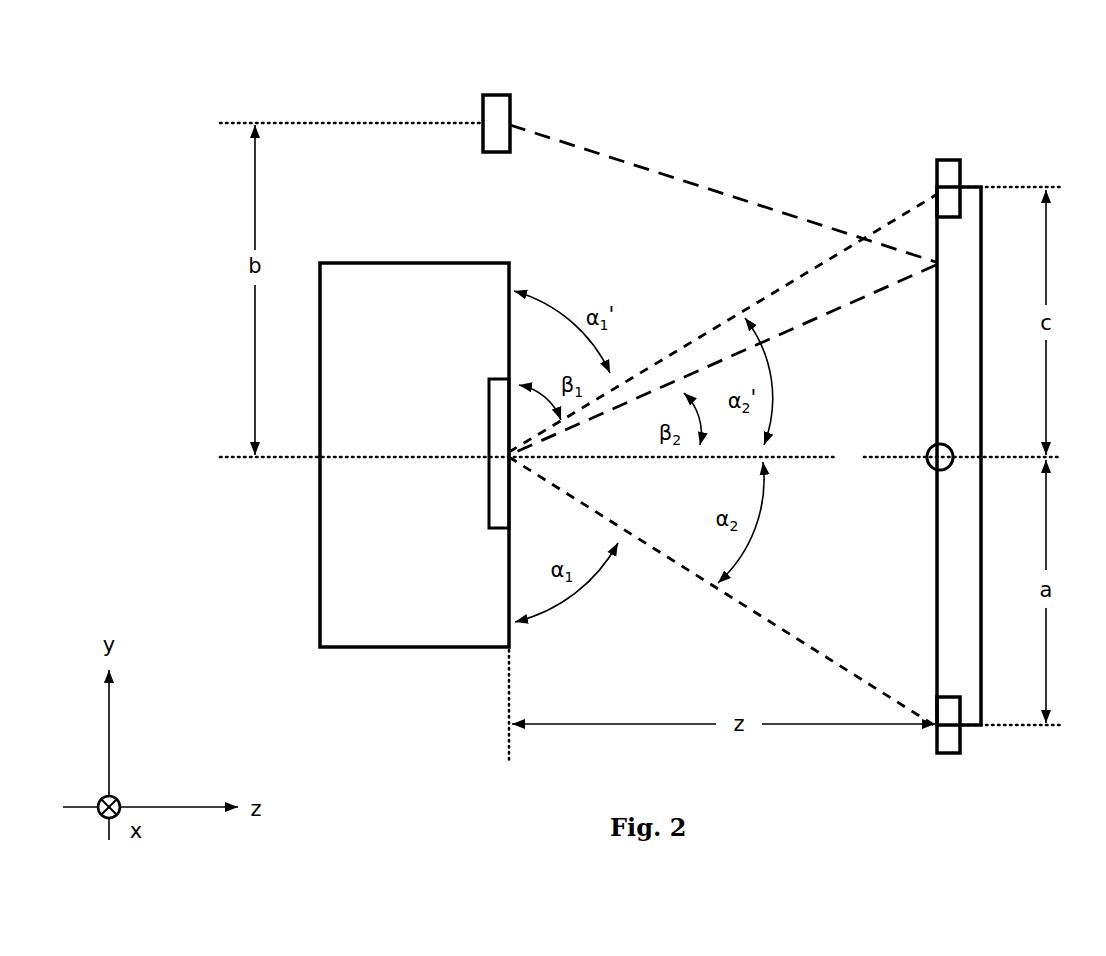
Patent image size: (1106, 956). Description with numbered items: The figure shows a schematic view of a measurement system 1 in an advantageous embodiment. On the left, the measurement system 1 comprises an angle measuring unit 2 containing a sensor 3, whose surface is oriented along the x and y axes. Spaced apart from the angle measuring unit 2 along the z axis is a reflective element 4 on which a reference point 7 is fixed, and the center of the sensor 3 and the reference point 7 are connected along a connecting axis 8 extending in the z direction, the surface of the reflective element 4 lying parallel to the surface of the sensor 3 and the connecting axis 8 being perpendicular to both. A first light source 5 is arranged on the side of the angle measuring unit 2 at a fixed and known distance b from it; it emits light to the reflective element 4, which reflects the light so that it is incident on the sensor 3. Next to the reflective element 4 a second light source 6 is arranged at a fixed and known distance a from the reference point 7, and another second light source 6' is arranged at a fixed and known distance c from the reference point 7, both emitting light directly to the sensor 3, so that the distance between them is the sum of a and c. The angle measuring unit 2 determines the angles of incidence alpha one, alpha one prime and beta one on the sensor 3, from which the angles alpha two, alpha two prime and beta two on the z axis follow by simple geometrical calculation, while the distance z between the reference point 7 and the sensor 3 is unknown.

The measurement system 1 is at (825, 110).
The angle measuring unit 2 is at (376, 648).
The sensor 3 is at (489, 462).
The reflective element 4 is at (981, 610).
The first light source 5 is at (483, 108).
The second light source 6 is at (980, 743).
The second light source 6' is at (961, 149).
The reference point 7 is at (953, 472).
The connecting axis 8 is at (640, 458).